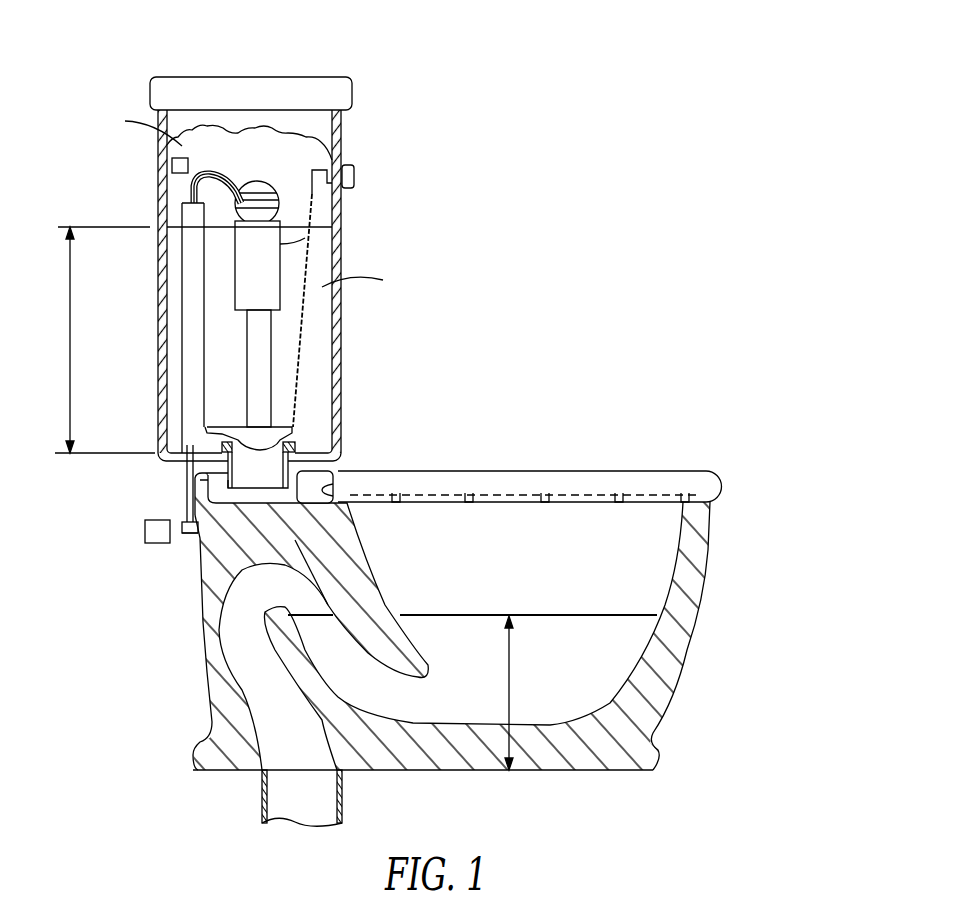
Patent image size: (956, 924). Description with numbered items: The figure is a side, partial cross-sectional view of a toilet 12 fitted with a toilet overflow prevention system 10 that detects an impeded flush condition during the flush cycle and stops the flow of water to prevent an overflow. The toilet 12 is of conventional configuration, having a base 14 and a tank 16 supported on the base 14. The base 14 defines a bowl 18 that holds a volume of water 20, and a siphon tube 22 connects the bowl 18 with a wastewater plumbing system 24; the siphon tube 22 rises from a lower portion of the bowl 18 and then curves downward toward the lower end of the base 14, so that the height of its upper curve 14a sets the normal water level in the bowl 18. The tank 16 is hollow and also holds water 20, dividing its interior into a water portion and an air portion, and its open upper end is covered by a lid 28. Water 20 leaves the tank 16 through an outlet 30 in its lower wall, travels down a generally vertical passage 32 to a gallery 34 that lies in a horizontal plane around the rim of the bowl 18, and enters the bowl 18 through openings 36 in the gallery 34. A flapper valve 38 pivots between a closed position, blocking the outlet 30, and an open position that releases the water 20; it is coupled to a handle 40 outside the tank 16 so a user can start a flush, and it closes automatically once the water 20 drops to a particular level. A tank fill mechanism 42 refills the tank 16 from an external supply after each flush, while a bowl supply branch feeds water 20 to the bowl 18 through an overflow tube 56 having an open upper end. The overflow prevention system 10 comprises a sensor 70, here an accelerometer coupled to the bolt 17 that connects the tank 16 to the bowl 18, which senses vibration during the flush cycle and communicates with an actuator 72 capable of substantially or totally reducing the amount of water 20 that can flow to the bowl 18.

The toilet overflow prevention system 10 is at (226, 310).
The toilet 12 is at (428, 430).
The base 14 is at (468, 618).
The upper curve 14a is at (230, 588).
The tank 16 is at (352, 249).
The bolt 17 is at (190, 536).
The bowl 18 is at (653, 597).
The water 20 is at (320, 315).
The siphon tube 22 is at (218, 628).
The wastewater plumbing system 24 is at (345, 795).
The lid 28 is at (300, 77).
The outlet 30 is at (295, 458).
The passage 32 is at (222, 472).
The gallery 34 is at (305, 488).
The openings 36 is at (396, 503).
The flapper valve 38 is at (298, 430).
The handle 40 is at (355, 168).
The tank fill mechanism 42 is at (252, 181).
The overflow tube 56 is at (199, 300).
The sensor 70 is at (145, 536).
The actuator 72 is at (285, 245).